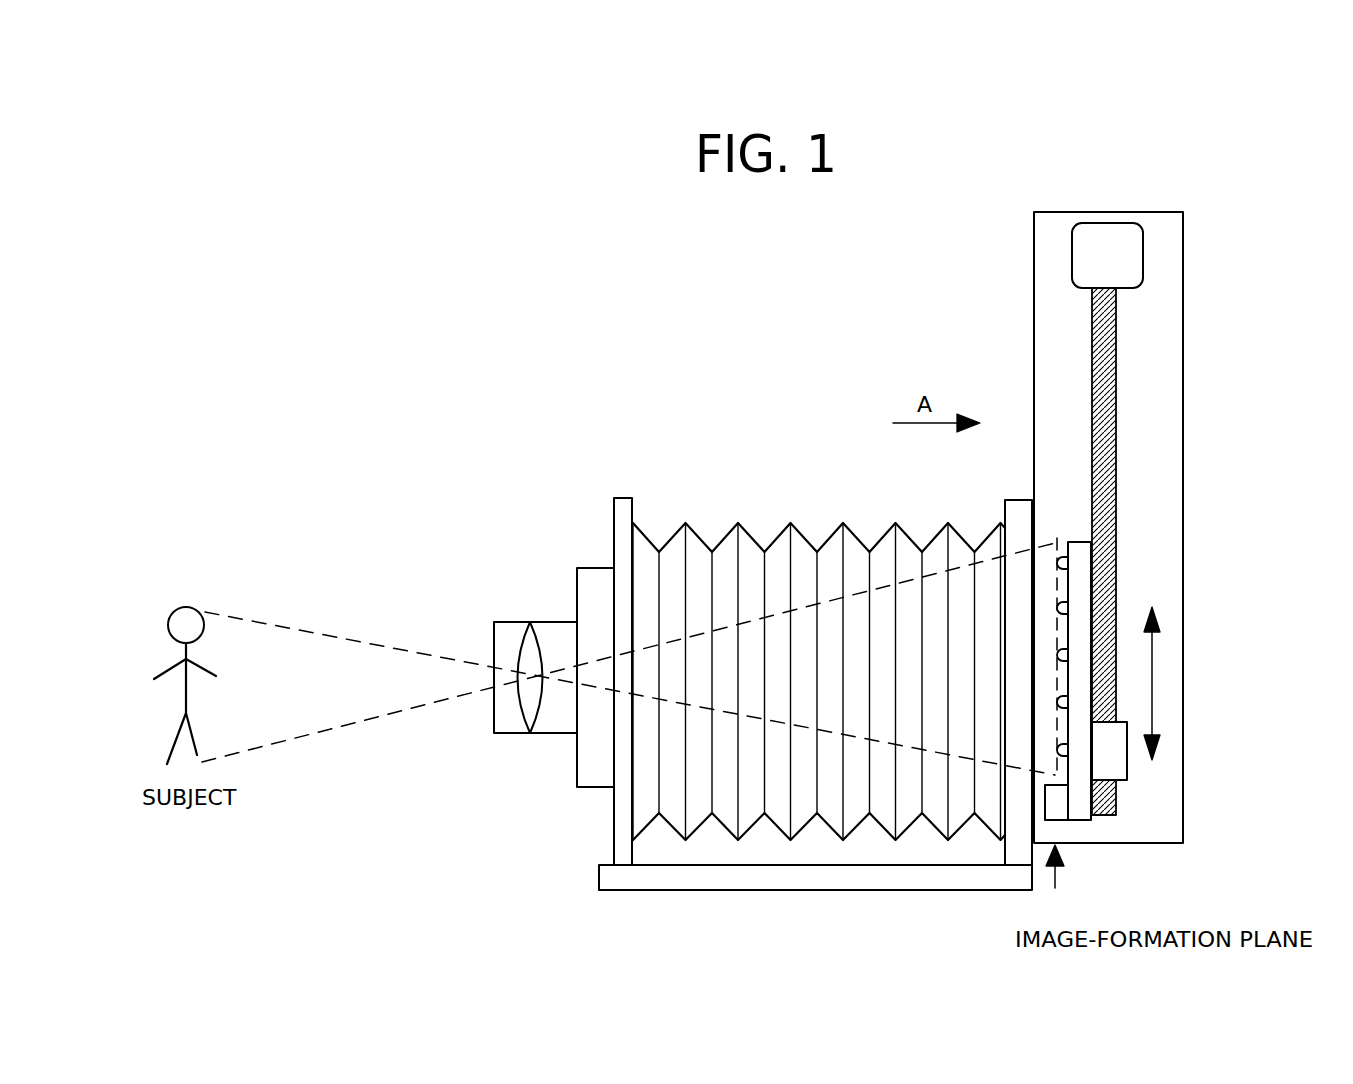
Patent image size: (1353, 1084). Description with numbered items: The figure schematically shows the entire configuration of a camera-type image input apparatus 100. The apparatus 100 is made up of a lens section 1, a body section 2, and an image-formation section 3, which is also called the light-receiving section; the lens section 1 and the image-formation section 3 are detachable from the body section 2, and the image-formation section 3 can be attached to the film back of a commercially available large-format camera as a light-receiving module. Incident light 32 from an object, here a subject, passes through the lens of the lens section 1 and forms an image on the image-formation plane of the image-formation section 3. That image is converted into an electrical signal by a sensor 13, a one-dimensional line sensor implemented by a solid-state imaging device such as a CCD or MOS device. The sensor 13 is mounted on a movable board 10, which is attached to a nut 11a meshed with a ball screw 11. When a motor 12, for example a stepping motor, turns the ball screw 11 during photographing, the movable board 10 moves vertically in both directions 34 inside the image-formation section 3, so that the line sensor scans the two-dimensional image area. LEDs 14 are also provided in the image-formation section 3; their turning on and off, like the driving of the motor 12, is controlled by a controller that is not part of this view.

The camera-type image input apparatus 100 is at (585, 242).
The lens section 1 is at (511, 620).
The body section 2 is at (805, 530).
The image-formation section 3 is at (1075, 212).
The movable board 10 is at (1080, 810).
The ball screw 11 is at (1110, 363).
The nut 11a is at (1120, 776).
The motor 12 is at (1135, 252).
The sensor 13 is at (1058, 810).
The LEDs 14 is at (1057, 552).
The incident light 32 is at (310, 628).
The directions 34 is at (1153, 672).